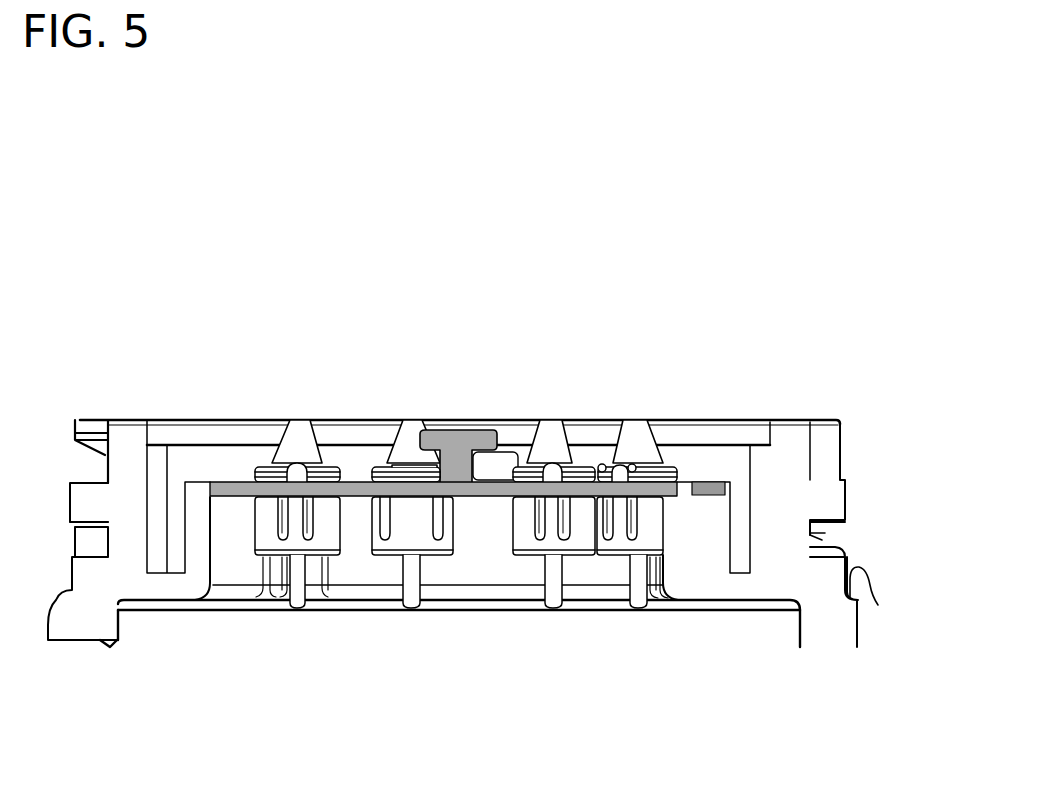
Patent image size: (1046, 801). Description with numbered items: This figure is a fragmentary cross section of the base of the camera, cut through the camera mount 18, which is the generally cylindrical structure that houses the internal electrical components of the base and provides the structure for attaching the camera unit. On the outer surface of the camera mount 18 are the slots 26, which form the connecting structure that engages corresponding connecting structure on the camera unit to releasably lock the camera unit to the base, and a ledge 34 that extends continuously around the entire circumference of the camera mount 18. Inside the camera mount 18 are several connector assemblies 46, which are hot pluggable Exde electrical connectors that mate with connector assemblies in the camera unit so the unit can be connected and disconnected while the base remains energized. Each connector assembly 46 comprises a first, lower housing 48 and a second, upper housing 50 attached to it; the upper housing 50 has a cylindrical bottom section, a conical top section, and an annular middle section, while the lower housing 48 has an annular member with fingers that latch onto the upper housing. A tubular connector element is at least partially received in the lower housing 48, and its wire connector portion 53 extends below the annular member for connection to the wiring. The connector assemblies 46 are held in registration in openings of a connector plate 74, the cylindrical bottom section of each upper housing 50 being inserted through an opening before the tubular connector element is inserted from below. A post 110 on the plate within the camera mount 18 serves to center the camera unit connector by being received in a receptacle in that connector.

The camera mount 18 is at (801, 420).
The slots 26 is at (100, 541).
The ledge 34 is at (862, 578).
The connector assemblies 46 is at (258, 468).
The first, lower housing 48 is at (262, 535).
The second, upper housing 50 is at (298, 432).
The wire connector portion 53 is at (295, 600).
The connector plate 74 is at (490, 496).
The post 110 is at (453, 432).